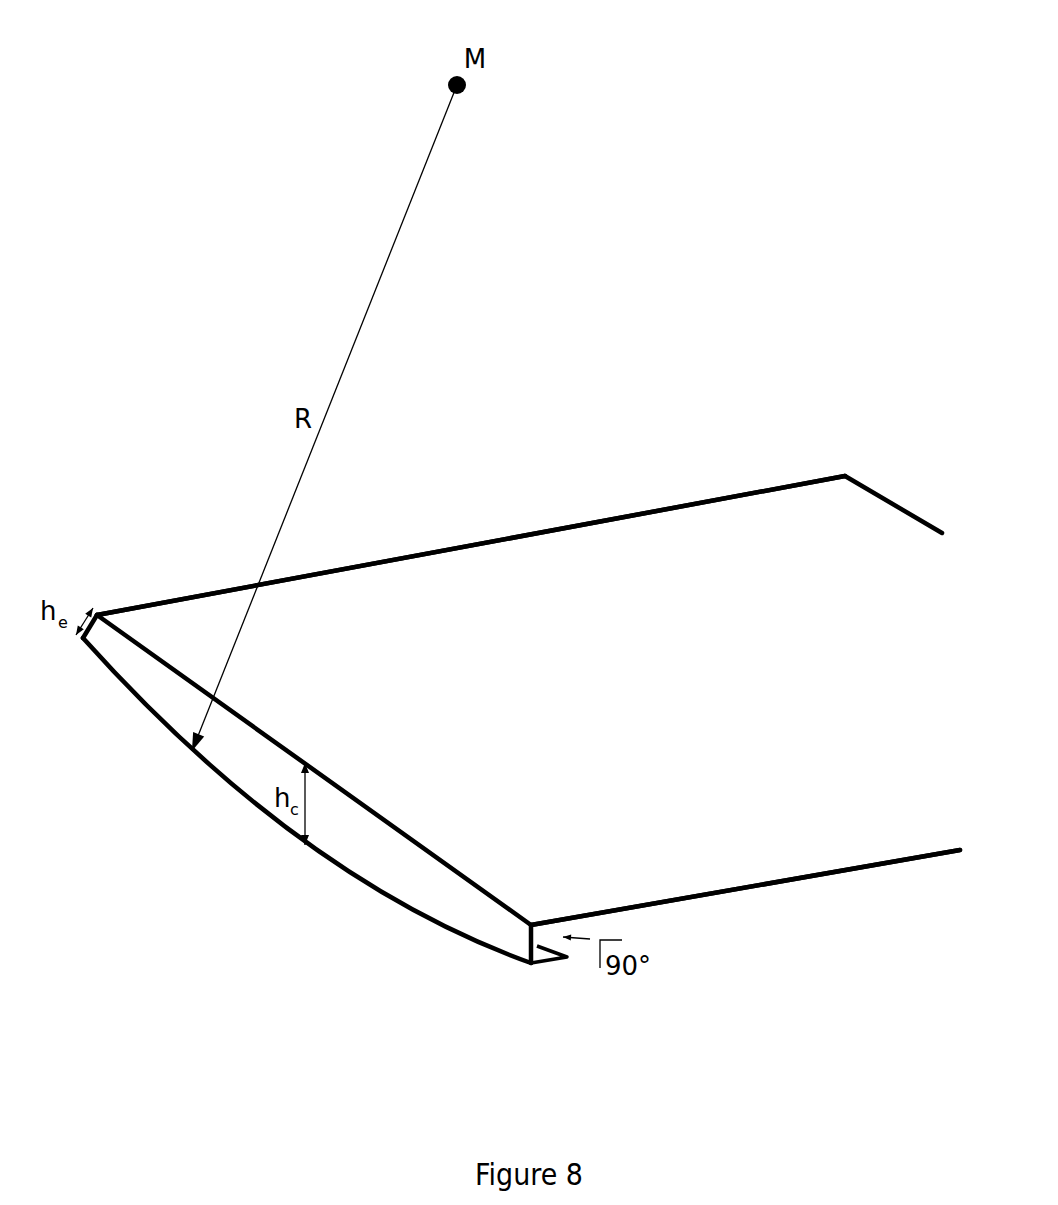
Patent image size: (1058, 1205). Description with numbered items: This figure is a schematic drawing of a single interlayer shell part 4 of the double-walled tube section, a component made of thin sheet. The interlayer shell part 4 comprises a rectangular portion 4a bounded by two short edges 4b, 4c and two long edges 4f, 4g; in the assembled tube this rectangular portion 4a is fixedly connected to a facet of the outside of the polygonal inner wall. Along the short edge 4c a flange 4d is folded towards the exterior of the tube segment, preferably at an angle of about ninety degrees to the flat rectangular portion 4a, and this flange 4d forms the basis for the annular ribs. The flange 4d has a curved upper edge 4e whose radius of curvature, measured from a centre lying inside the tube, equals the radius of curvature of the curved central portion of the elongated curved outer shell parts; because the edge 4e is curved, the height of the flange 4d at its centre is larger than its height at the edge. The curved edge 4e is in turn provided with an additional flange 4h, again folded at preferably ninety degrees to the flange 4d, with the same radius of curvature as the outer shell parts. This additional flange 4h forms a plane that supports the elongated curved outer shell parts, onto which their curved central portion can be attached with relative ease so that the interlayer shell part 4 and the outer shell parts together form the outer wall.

The interlayer shell part 4 is at (523, 480).
The rectangular portion 4a is at (528, 700).
The short edge 4b is at (868, 487).
The short edge 4c is at (452, 870).
The flange 4d is at (307, 789).
The curved upper edge 4e is at (330, 868).
The long edge 4f is at (723, 893).
The long edge 4g is at (471, 545).
The additional flange 4h is at (547, 958).